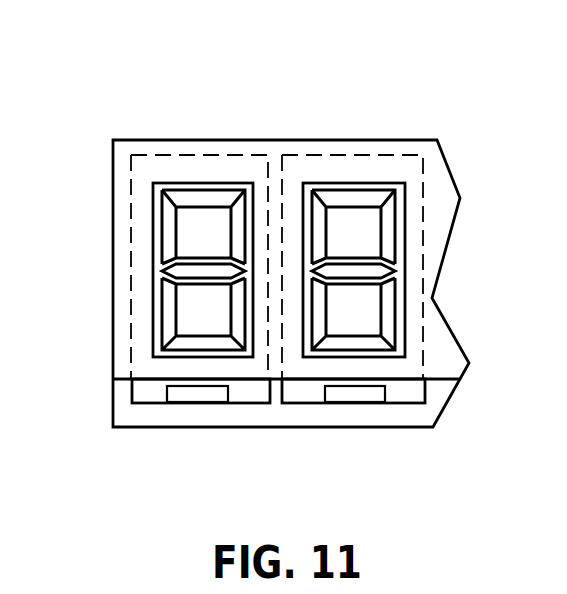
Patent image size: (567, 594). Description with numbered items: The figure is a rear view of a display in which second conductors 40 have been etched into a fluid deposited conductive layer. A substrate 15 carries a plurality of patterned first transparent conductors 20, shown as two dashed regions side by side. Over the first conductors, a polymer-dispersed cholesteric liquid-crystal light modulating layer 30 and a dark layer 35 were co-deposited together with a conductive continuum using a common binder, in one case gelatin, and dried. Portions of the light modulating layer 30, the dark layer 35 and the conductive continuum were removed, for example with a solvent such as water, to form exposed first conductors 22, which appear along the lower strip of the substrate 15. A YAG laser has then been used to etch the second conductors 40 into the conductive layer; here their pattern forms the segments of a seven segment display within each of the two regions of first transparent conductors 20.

The substrate 15 is at (263, 427).
The first transparent conductor 20 is at (190, 155).
The exposed first conductor 22 is at (152, 403).
The polymer-dispersed cholesteric liquid-crystal light modulating layer 30 is at (186, 218).
The dark layer 35 is at (186, 218).
The second conductor 40 is at (165, 237).